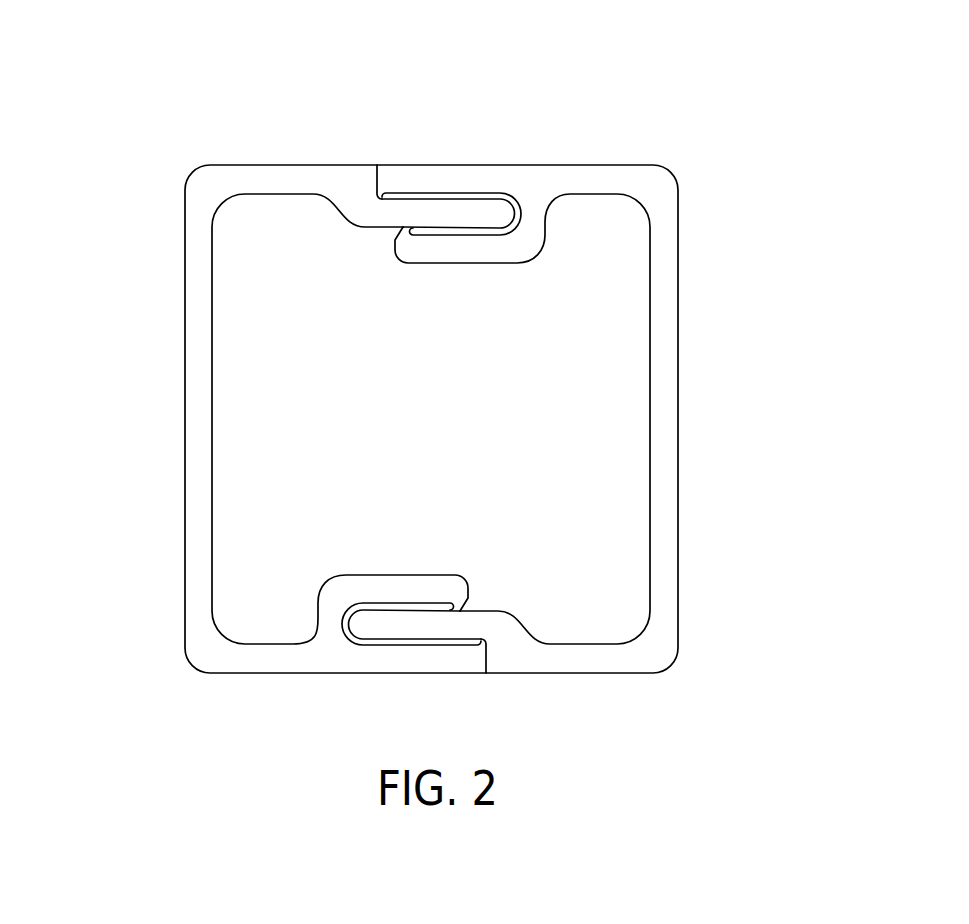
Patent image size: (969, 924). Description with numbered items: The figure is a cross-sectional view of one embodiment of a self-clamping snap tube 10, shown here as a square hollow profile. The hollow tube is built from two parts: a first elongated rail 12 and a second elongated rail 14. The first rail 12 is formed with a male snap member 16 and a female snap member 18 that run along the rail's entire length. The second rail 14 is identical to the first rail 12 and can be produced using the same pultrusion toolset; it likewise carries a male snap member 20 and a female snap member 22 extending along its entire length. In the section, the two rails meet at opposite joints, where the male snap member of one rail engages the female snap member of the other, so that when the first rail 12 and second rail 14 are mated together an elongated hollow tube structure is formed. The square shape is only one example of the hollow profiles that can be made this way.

The snap tube 10 is at (421, 391).
The first elongated rail 12 is at (667, 382).
The second elongated rail 14 is at (196, 413).
The male snap member 16 is at (435, 628).
The female snap member 18 is at (468, 170).
The male snap member 20 is at (440, 213).
The female snap member 22 is at (392, 658).